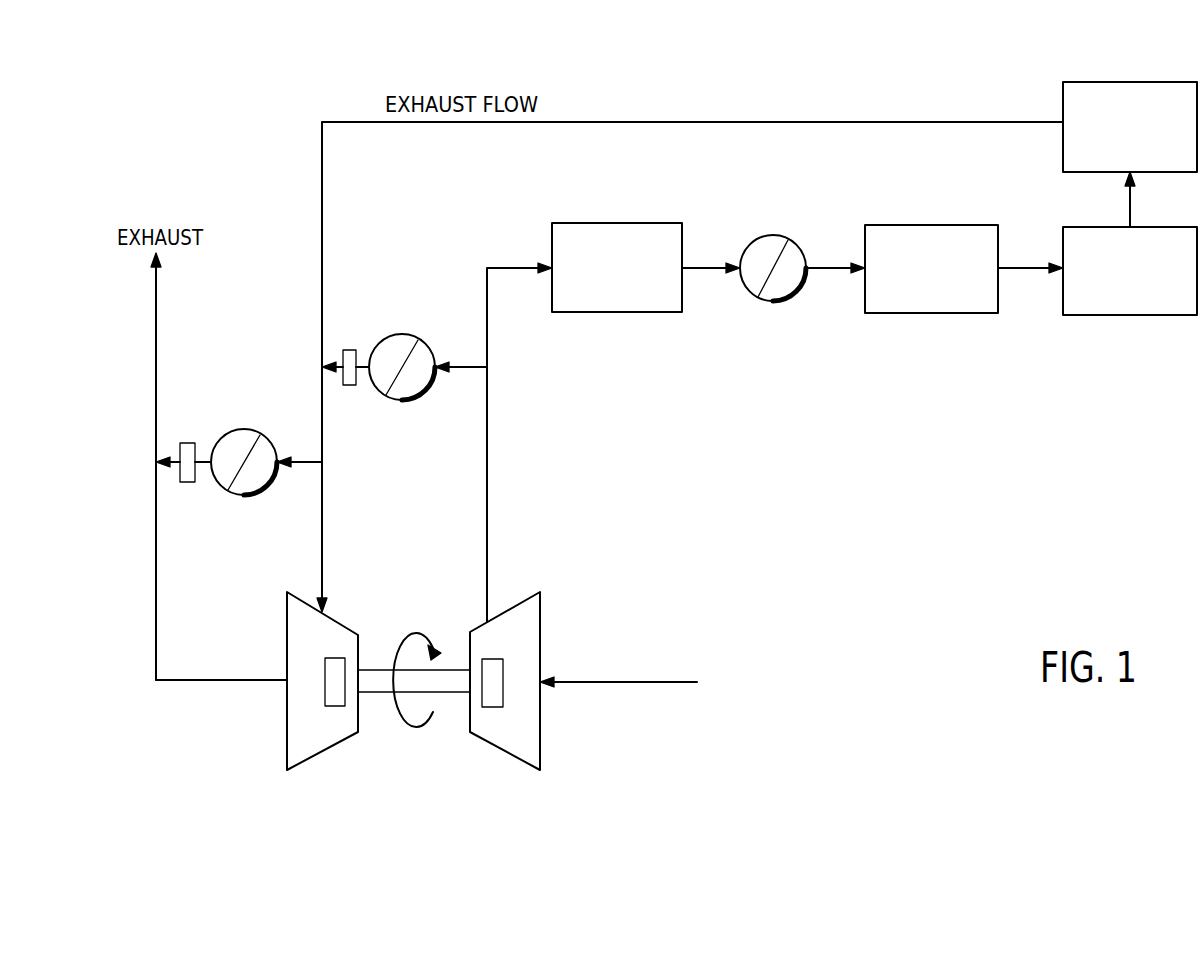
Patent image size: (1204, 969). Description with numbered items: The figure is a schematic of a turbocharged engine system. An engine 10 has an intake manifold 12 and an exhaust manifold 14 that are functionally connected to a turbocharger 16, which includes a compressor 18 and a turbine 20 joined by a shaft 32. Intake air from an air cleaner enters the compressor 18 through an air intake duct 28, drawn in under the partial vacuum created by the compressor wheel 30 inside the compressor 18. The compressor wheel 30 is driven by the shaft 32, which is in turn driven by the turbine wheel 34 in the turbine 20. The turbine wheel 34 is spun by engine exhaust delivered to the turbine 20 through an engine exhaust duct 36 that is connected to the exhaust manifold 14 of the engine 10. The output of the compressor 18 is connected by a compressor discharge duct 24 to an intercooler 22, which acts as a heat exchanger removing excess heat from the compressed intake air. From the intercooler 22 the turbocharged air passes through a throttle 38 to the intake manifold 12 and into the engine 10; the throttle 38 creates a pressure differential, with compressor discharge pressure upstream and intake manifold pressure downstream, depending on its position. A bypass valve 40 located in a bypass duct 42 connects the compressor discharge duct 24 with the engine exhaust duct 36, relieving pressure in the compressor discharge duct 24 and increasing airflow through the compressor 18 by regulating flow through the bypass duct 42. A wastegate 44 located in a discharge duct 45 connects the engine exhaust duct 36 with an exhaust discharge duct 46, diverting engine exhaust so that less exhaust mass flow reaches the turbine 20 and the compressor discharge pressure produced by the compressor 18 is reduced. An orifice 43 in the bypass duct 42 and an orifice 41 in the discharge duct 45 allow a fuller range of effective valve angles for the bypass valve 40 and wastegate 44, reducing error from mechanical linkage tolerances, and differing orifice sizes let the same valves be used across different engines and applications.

The engine 10 is at (1130, 316).
The intake manifold 12 is at (930, 314).
The exhaust manifold 14 is at (1128, 82).
The turbocharger 16 is at (436, 734).
The compressor 18 is at (530, 748).
The turbine 20 is at (303, 740).
The intercooler 22 is at (617, 312).
The compressor discharge duct 24 is at (487, 470).
The air intake duct 28 is at (648, 680).
The compressor wheel 30 is at (503, 673).
The shaft 32 is at (450, 667).
The turbine wheel 34 is at (335, 675).
The engine exhaust duct 36 is at (757, 122).
The throttle 38 is at (775, 262).
The bypass valve 40 is at (407, 355).
The orifice 41 is at (190, 443).
The bypass duct 42 is at (468, 357).
The orifice 43 is at (353, 350).
The wastegate 44 is at (250, 450).
The discharge duct 45 is at (308, 453).
The exhaust discharge duct 46 is at (156, 352).